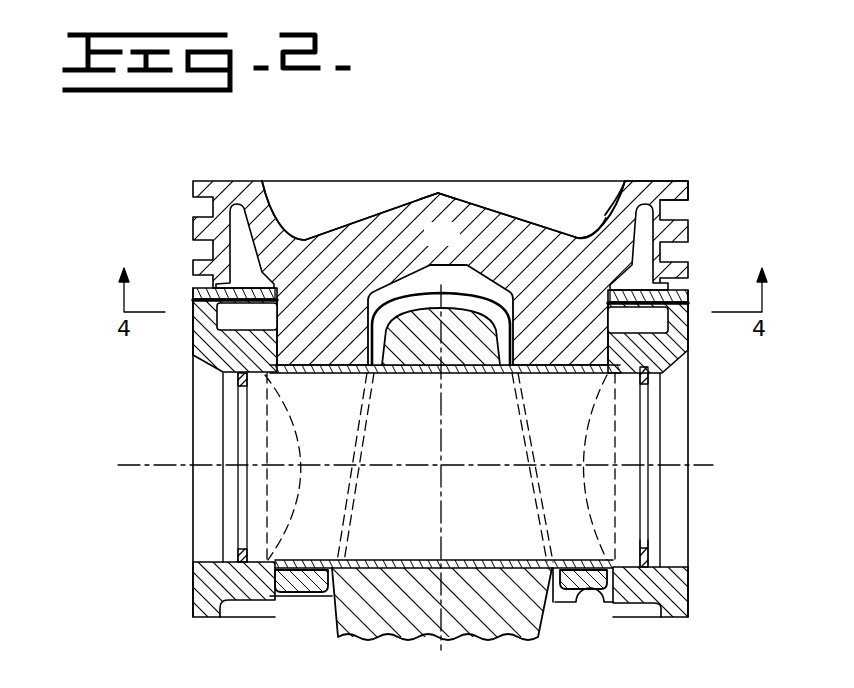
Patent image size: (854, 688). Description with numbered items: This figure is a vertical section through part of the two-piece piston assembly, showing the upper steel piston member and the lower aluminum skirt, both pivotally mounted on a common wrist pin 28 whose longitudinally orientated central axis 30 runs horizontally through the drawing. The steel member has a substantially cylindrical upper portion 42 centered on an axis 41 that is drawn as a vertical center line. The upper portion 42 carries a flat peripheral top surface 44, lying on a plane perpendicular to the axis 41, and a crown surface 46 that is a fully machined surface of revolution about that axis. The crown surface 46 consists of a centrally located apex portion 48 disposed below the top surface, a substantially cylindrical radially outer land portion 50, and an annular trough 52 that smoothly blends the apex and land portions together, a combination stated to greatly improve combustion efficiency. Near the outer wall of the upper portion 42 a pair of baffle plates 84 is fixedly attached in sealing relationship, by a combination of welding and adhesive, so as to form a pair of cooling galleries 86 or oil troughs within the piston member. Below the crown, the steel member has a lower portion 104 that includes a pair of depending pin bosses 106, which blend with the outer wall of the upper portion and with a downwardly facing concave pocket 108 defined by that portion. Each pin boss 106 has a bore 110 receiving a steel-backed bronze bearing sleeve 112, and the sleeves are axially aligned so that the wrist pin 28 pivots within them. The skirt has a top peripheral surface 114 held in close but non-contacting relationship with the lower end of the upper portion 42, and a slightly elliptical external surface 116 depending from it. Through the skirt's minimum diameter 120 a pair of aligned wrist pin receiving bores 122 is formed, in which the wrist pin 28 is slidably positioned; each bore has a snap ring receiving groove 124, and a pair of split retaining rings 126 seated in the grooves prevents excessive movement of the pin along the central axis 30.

The wrist pin 28 is at (660, 417).
The central axis 30 is at (367, 467).
The axis 41 is at (441, 520).
The upper portion 42 is at (456, 245).
The peripheral top surface 44 is at (648, 207).
The crown surface 46 is at (497, 212).
The apex portion 48 is at (437, 192).
The outer land portion 50 is at (620, 193).
The annular trough 52 is at (603, 235).
The baffle plates 84 is at (240, 311).
The cooling galleries 86 is at (237, 257).
The lower portion 104 is at (372, 298).
The concave pocket 108 is at (447, 272).
The pin bosses 106 is at (552, 598).
The bore 110 is at (586, 566).
The bearing sleeve 112 is at (292, 592).
The top peripheral surface 114 is at (686, 295).
The external surface 116 is at (689, 342).
The minimum diameter 120 is at (689, 594).
The wrist pin receiving bores 122 is at (649, 546).
The snap ring receiving groove 124 is at (612, 600).
The split retaining rings 126 is at (244, 552).